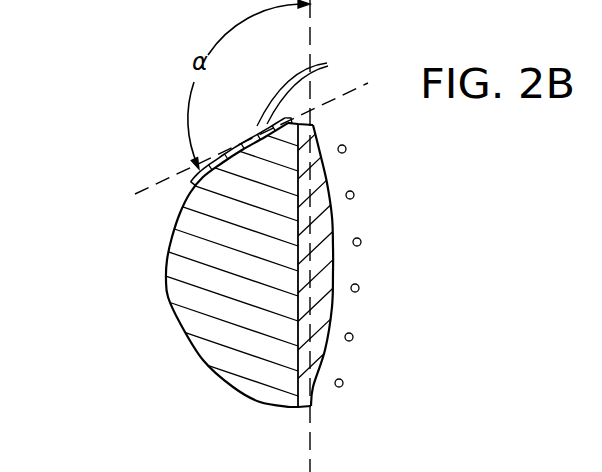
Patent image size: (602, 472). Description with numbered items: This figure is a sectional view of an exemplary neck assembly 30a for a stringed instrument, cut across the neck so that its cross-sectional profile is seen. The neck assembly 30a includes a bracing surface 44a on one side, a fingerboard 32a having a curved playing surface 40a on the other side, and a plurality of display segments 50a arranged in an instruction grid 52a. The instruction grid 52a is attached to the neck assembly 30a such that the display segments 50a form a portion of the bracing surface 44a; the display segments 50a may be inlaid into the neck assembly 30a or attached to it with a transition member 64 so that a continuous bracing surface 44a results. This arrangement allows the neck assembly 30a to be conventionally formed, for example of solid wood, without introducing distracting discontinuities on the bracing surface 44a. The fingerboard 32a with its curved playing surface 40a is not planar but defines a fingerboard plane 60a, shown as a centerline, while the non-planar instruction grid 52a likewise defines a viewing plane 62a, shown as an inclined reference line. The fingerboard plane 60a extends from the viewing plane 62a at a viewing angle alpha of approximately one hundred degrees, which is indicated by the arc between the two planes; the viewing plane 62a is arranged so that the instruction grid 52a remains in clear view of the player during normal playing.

The neck assembly 30a is at (369, 160).
The fingerboard 32a is at (322, 225).
The curved playing surface 40a is at (333, 273).
The bracing surface 44a is at (163, 258).
The display segments 50a is at (315, 87).
The instruction grid 52a is at (231, 132).
The fingerboard plane 60a is at (312, 30).
The viewing plane 62a is at (133, 195).
The transition member 64 is at (197, 170).